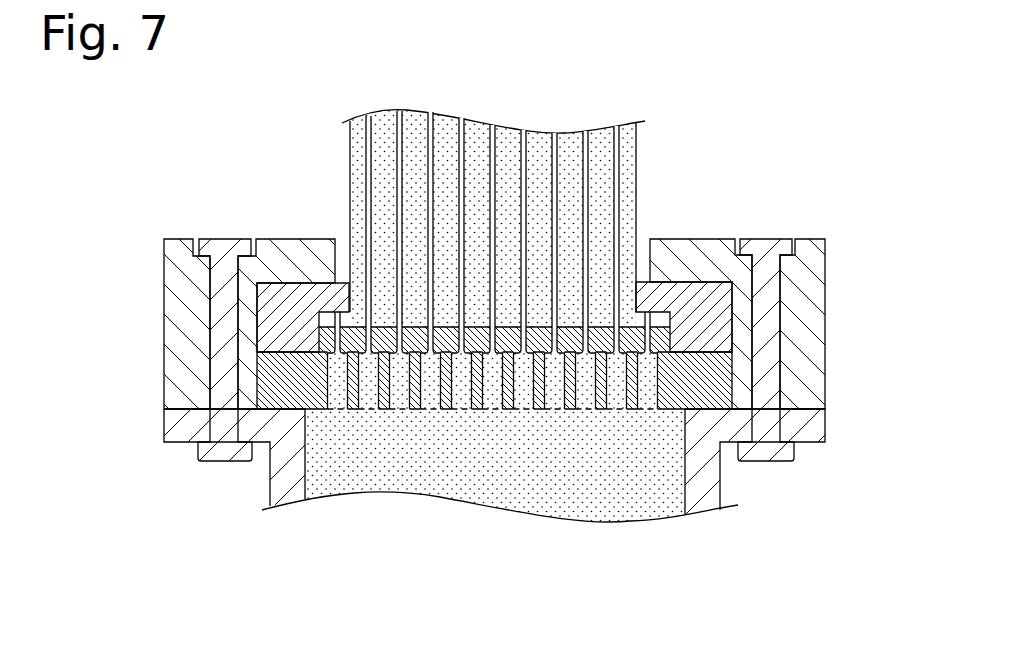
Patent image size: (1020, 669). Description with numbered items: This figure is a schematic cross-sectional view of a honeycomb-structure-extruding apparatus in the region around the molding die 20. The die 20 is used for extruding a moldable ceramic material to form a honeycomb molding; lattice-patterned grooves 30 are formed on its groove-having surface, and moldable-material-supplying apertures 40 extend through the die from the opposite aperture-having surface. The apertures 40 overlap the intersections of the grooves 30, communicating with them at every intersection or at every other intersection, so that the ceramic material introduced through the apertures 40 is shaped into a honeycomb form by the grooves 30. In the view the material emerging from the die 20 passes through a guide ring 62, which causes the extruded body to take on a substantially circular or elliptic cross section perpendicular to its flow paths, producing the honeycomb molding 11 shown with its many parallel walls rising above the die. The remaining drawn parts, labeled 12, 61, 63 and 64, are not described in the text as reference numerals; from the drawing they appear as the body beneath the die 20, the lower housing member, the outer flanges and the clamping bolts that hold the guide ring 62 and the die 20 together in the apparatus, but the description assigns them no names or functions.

The honeycomb molding 11 is at (360, 163).
The second member 12 is at (607, 508).
The molding die 20 is at (705, 375).
The grooves 30 is at (650, 328).
The moldable-material-supplying apertures 40 is at (648, 388).
The lower housing member 61 is at (287, 473).
The guide ring 62 is at (283, 332).
The outer flange 63 is at (180, 272).
The bolt 64 is at (758, 245).